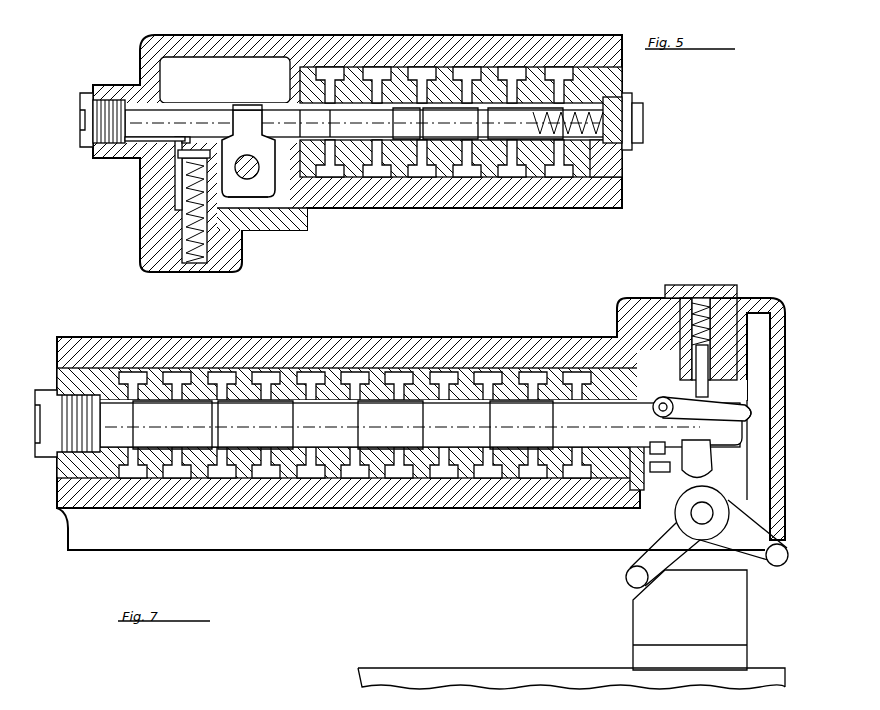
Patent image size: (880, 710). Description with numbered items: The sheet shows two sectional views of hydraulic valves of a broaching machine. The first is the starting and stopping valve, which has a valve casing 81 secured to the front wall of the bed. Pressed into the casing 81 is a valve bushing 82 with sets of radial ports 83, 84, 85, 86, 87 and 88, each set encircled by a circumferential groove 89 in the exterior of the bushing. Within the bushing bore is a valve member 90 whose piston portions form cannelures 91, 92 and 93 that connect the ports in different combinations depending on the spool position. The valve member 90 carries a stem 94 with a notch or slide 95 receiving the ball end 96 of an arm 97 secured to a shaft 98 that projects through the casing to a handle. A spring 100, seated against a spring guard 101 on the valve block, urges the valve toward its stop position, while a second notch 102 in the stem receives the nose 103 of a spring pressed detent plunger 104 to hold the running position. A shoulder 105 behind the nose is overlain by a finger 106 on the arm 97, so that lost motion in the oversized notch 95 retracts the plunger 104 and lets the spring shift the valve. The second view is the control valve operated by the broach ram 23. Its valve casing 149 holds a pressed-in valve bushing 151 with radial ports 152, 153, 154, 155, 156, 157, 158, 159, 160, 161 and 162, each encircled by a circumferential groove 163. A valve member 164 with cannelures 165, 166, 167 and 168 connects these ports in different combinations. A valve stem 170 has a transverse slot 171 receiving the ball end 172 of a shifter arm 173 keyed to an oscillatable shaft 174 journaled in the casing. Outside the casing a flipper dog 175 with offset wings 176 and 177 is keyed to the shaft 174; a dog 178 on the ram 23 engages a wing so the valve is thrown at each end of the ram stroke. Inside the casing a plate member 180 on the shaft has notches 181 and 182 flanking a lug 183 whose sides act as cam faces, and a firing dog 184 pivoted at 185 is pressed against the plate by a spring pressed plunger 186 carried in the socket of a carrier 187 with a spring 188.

In FIG. 5, the valve casing 81 is at (622, 193).
In FIG. 5, the valve bushing 82 is at (622, 160).
In FIG. 5, the radial ports 83 is at (342, 178).
In FIG. 5, the radial ports 84 is at (375, 178).
In FIG. 5, the radial ports 85 is at (420, 178).
In FIG. 5, the radial ports 86 is at (464, 178).
In FIG. 5, the radial ports 87 is at (508, 178).
In FIG. 5, the radial ports 88 is at (550, 178).
In FIG. 5, the circumferential groove 89 is at (577, 178).
In FIG. 5, the valve member 90 is at (302, 137).
In FIG. 5, the cannelure 91 is at (350, 145).
In FIG. 5, the cannelure 92 is at (448, 140).
In FIG. 5, the cannelure 93 is at (527, 140).
In FIG. 5, the stem 94 is at (142, 98).
In FIG. 5, the notch or slide 95 is at (240, 105).
In FIG. 5, the ball end 96 is at (250, 120).
In FIG. 5, the arm or finger 97 is at (252, 178).
In FIG. 5, the shaft 98 is at (245, 200).
In FIG. 5, the spring 100 is at (632, 100).
In FIG. 5, the spring guard 101 is at (643, 125).
In FIG. 5, the second notch 102 is at (184, 140).
In FIG. 5, the nose 103 is at (187, 137).
In FIG. 5, the spring pressed detent or plunger 104 is at (182, 228).
In FIG. 5, the shoulder 105 is at (180, 165).
In FIG. 5, the finger 106 is at (178, 152).
In FIG. 7, the valve casing 149 is at (272, 352).
In FIG. 7, the valve bushing 151 is at (65, 478).
In FIG. 7, the radial ports 152 is at (133, 478).
In FIG. 7, the radial ports 153 is at (178, 478).
In FIG. 7, the radial ports 154 is at (223, 478).
In FIG. 7, the radial ports 155 is at (266, 478).
In FIG. 7, the radial ports 156 is at (311, 478).
In FIG. 7, the radial ports 157 is at (355, 478).
In FIG. 7, the radial ports 158 is at (399, 478).
In FIG. 7, the radial ports 159 is at (444, 478).
In FIG. 7, the radial ports 160 is at (488, 478).
In FIG. 7, the radial ports 161 is at (533, 478).
In FIG. 7, the radial ports 162 is at (577, 478).
In FIG. 7, the circumferential groove 163 is at (140, 485).
In FIG. 7, the valve member 164 is at (107, 403).
In FIG. 7, the cannelure 165 is at (210, 405).
In FIG. 7, the cannelure 166 is at (300, 400).
In FIG. 7, the cannelure 167 is at (420, 405).
In FIG. 7, the cannelure 168 is at (555, 403).
In FIG. 7, the valve stem 170 is at (744, 425).
In FIG. 7, the transverse notch or slot 171 is at (712, 417).
In FIG. 7, the ball end 172 is at (682, 447).
In FIG. 7, the shifter arm 173 is at (690, 476).
In FIG. 7, the oscillatable shaft 174 is at (713, 513).
In FIG. 7, the flipper dog 175 is at (706, 541).
In FIG. 7, the wing 176 is at (665, 532).
In FIG. 7, the wing 177 is at (755, 540).
In FIG. 7, the dog 178 is at (748, 620).
In FIG. 7, the plate member 180 is at (770, 478).
In FIG. 7, the notch 181 is at (706, 470).
In FIG. 7, the notch 182 is at (770, 465).
In FIG. 7, the lug 183 is at (758, 412).
In FIG. 7, the detent or firing dog 184 is at (670, 395).
In FIG. 7, the pivot 185 is at (663, 400).
In FIG. 7, the spring pressed plunger 186 is at (708, 390).
In FIG. 7, the carrier 187 is at (737, 290).
In FIG. 7, the spring 188 is at (737, 327).
In FIG. 7, the broach ram 23 is at (585, 660).